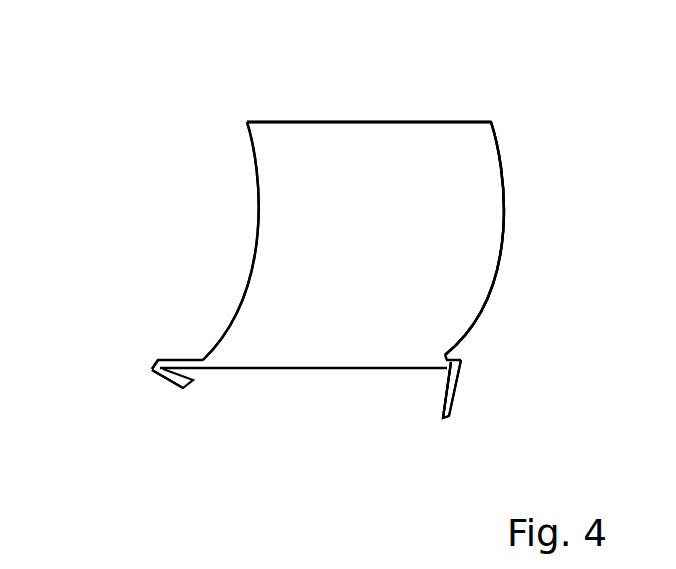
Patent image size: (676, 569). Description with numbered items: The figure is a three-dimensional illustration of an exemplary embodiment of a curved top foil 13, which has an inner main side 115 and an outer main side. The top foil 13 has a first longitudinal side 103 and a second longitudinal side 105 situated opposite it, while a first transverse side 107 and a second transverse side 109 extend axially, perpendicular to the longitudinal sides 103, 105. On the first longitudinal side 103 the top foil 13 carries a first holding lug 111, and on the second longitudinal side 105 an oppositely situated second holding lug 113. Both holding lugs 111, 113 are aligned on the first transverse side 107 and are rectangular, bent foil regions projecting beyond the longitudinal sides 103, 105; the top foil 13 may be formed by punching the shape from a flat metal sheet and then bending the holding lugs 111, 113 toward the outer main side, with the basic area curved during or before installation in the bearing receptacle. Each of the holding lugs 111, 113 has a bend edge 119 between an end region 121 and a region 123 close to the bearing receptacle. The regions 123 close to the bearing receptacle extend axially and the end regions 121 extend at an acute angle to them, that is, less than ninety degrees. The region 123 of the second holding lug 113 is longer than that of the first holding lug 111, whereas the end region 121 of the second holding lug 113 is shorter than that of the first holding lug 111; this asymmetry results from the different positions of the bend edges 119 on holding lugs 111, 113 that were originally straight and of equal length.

The top foil 13 is at (516, 148).
The first longitudinal side 103 is at (503, 242).
The second longitudinal side 105 is at (258, 237).
The first transverse side 107 is at (313, 370).
The second transverse side 109 is at (392, 122).
The first holding lug 111 is at (462, 380).
The second holding lug 113 is at (184, 360).
The inner main side 115 is at (305, 196).
The bend edge 119 is at (153, 368).
The end region 121 is at (176, 386).
The region close to the bearing receptacle 123 is at (190, 385).